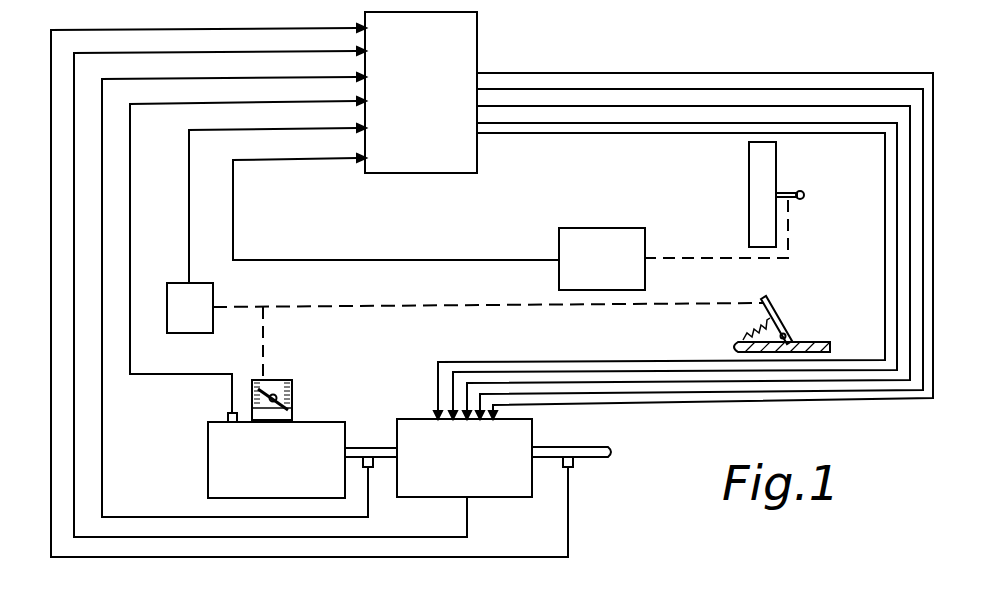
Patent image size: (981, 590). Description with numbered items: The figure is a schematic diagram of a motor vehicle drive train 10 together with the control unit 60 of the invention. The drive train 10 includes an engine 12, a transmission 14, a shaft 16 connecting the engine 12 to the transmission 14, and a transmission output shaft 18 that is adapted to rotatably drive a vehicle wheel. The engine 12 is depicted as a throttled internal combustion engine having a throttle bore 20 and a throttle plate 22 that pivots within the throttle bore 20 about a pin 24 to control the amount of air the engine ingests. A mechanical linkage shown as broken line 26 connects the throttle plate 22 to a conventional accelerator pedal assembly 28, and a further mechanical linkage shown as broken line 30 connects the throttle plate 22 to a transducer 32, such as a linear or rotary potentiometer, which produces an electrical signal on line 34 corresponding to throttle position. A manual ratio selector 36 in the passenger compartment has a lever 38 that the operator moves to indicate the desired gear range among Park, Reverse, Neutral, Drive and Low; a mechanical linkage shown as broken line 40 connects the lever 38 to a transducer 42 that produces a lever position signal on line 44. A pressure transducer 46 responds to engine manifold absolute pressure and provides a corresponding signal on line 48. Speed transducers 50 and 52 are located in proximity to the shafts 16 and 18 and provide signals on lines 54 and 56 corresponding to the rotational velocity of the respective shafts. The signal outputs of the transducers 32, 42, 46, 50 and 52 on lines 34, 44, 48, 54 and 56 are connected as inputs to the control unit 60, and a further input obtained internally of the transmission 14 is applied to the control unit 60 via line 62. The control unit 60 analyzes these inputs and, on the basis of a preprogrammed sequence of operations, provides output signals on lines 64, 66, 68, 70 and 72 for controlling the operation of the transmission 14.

The drive train 10 is at (382, 388).
The engine 12 is at (206, 480).
The transmission 14 is at (422, 418).
The shaft 16 is at (366, 446).
The transmission output shaft 18 is at (577, 447).
The throttle bore 20 is at (293, 400).
The throttle plate 22 is at (279, 394).
The pin 24 is at (270, 393).
The mechanical linkage 26 is at (437, 308).
The accelerator pedal assembly 28 is at (786, 325).
The mechanical linkage 30 is at (267, 343).
The transducer 32 is at (165, 310).
The line 34 is at (188, 160).
The manual ratio selector 36 is at (747, 158).
The lever 38 is at (805, 192).
The mechanical linkage 40 is at (672, 262).
The transducer 42 is at (646, 236).
The line 44 is at (445, 260).
The pressure transducer 46 is at (226, 416).
The line 48 is at (176, 375).
The speed transducer 50 is at (371, 468).
The speed transducer 52 is at (577, 468).
The line 54 is at (236, 519).
The line 56 is at (571, 520).
The control unit 60 is at (470, 150).
The line 62 is at (470, 505).
The line 64 is at (577, 73).
The line 66 is at (667, 89).
The line 68 is at (709, 106).
The line 70 is at (597, 120).
The line 72 is at (645, 133).